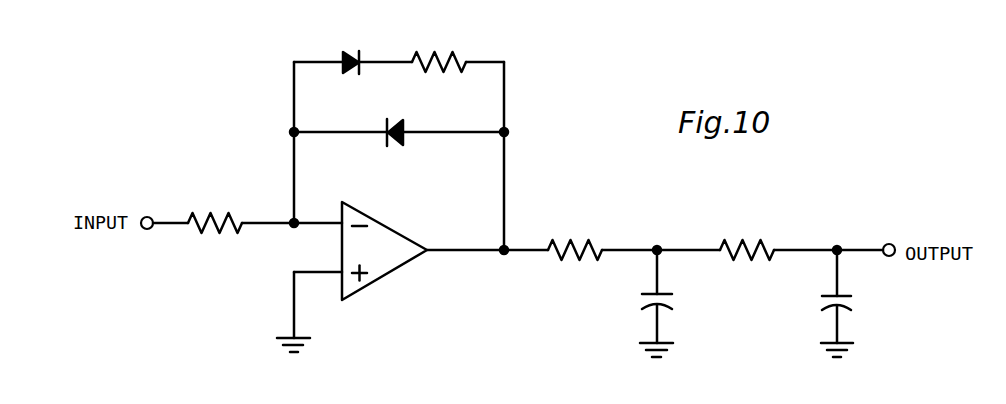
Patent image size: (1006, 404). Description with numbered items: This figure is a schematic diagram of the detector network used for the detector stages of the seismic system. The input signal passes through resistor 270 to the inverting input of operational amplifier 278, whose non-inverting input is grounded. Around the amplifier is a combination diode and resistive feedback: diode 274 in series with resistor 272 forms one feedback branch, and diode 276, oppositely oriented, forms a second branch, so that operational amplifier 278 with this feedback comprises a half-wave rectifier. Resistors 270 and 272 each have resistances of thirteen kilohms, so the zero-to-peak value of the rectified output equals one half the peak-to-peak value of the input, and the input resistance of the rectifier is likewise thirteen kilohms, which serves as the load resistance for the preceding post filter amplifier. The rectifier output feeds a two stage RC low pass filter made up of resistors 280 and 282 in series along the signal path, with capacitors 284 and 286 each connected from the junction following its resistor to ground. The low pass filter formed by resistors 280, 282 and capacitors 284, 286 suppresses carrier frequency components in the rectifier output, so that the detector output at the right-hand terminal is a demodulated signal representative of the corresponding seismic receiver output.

The resistor 270 is at (217, 212).
The resistor 272 is at (438, 56).
The diode 274 is at (347, 57).
The diode 276 is at (400, 122).
The operational amplifier 278 is at (412, 238).
The resistor 280 is at (582, 242).
The resistor 282 is at (737, 242).
The capacitor 284 is at (673, 298).
The capacitor 286 is at (853, 300).